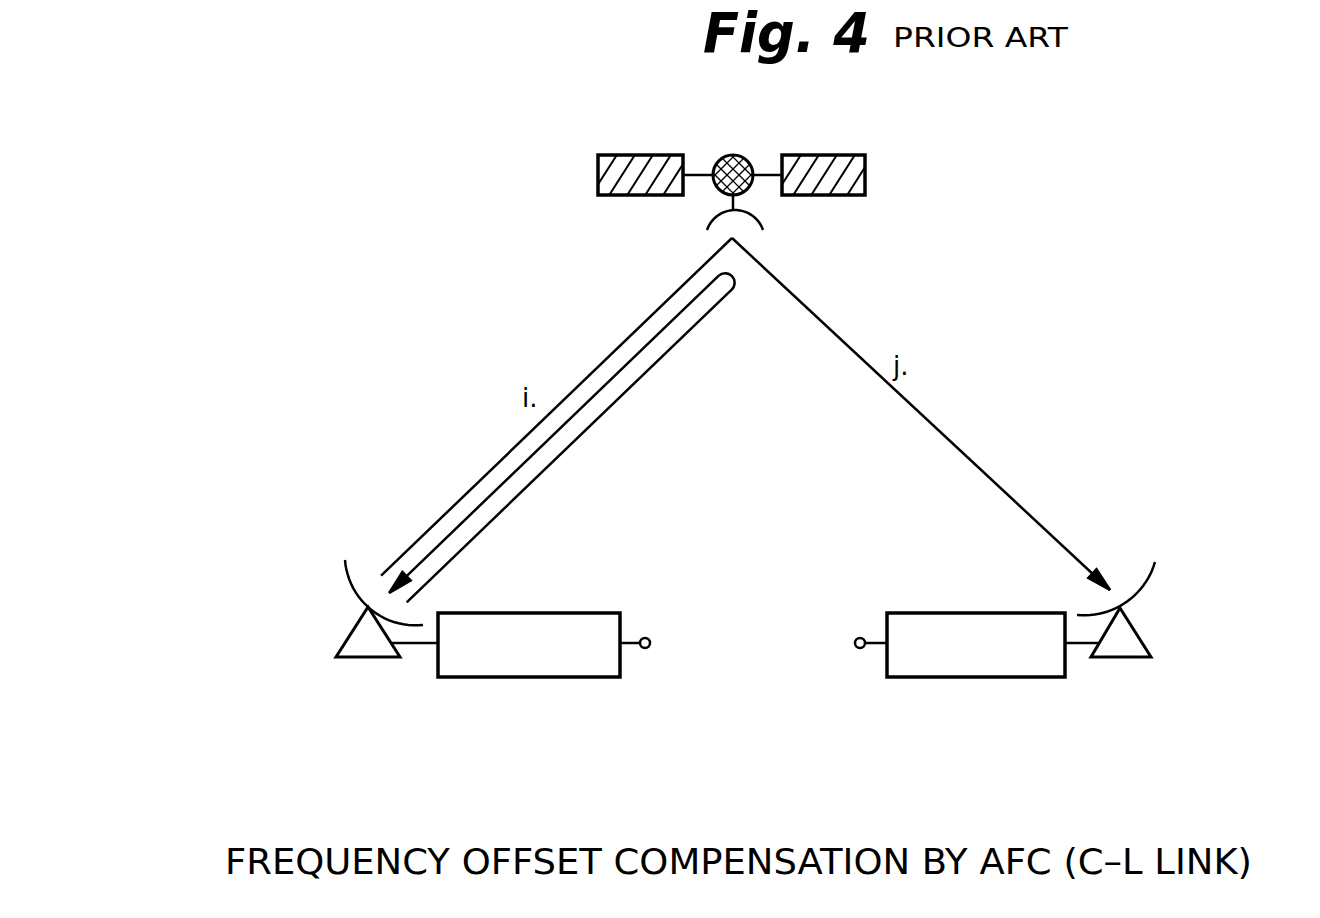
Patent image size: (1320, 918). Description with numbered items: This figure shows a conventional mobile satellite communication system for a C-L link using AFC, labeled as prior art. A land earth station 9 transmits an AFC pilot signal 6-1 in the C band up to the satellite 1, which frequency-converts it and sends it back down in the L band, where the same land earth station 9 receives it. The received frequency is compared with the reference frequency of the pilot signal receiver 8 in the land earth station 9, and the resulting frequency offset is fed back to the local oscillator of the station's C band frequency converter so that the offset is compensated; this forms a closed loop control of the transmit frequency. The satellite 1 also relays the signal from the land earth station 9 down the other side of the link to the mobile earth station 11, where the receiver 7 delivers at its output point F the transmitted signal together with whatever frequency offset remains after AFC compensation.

The satellite 1 is at (865, 178).
The AFC pilot signal 6-1 is at (582, 433).
The receiver 7 is at (967, 613).
The pilot signal receiver 8 is at (532, 613).
The land earth station 9 is at (355, 657).
The mobile earth station 11 is at (1120, 657).